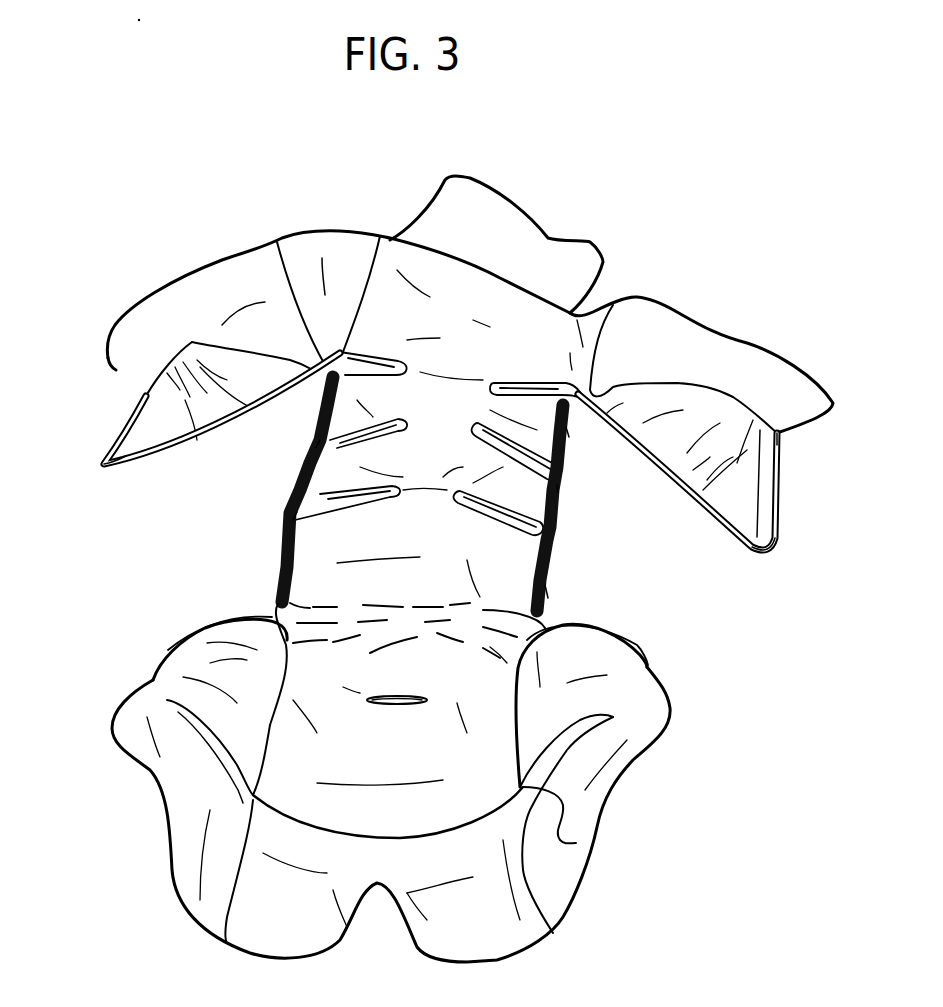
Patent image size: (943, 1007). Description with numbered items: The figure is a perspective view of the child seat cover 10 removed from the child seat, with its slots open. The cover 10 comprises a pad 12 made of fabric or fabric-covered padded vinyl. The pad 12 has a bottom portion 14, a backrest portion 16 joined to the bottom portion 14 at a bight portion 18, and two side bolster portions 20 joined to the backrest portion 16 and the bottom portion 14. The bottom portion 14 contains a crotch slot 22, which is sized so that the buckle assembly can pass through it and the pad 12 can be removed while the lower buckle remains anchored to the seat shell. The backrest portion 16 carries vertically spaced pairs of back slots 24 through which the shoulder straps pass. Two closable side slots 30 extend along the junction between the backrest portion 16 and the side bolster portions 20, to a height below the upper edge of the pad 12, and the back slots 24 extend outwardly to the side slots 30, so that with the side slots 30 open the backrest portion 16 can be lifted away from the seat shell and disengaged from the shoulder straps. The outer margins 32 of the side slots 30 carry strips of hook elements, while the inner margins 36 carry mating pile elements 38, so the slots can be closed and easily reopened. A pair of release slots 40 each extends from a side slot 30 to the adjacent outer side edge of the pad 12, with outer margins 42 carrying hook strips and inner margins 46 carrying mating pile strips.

The cover 10 is at (310, 207).
The pad 12 is at (388, 250).
The bottom portion 14 is at (576, 843).
The backrest portion 16 is at (468, 311).
The bight portion 18 is at (411, 618).
The side bolster portions 20 is at (170, 310).
The crotch slot 22 is at (424, 698).
The back slots 24 is at (395, 357).
The side slots 30 is at (193, 476).
The outer margins 32 is at (127, 468).
The inner margins 36 is at (316, 422).
The pile elements 38 is at (291, 512).
The release slots 40 is at (108, 427).
The outer margins 42 is at (118, 372).
The inner margins 46 is at (165, 653).